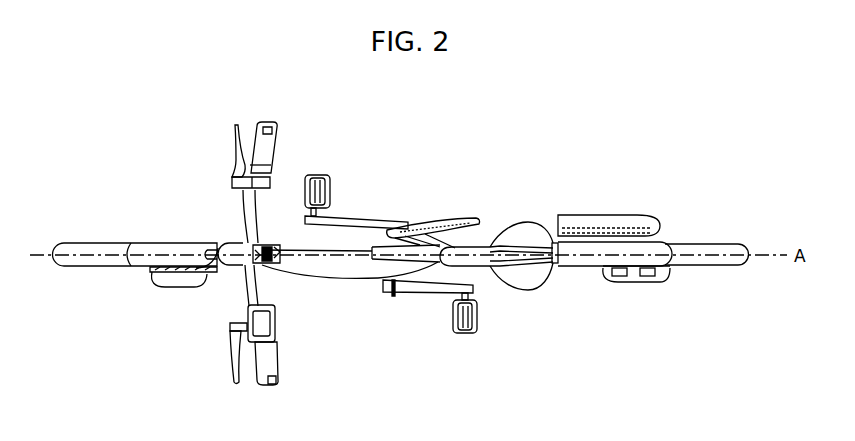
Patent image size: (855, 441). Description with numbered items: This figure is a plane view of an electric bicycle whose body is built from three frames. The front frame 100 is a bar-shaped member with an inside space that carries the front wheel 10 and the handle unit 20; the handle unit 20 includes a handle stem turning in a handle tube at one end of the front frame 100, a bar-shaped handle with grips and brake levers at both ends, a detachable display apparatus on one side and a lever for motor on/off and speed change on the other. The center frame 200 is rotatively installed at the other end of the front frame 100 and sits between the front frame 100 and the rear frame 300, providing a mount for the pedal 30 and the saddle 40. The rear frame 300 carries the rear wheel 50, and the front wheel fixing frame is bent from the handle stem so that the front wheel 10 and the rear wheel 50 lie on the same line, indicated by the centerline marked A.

The front wheel 10 is at (94, 267).
The handle unit 20 is at (224, 333).
The pedal 30 is at (455, 320).
The saddle 40 is at (527, 273).
The rear wheel 50 is at (708, 261).
The front frame 100 is at (318, 282).
The center frame 200 is at (397, 250).
The rear frame 300 is at (555, 242).